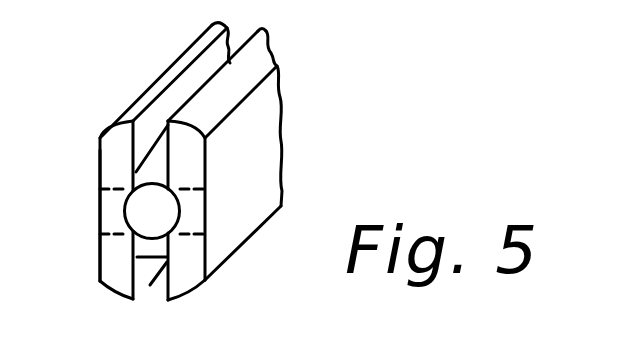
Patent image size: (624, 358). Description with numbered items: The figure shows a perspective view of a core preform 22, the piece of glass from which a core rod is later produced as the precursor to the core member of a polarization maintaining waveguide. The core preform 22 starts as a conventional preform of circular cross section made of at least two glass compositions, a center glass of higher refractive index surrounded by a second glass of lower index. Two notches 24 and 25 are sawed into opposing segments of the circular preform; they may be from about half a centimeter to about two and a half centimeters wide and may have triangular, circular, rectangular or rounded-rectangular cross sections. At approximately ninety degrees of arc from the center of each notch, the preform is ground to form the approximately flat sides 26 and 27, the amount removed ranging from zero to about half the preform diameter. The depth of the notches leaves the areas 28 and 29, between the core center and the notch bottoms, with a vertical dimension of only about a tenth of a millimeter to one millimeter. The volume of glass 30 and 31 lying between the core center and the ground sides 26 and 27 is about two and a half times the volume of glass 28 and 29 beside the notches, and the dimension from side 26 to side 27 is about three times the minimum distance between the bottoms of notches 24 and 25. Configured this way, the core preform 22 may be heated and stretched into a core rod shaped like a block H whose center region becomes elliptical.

The core preform 22 is at (290, 46).
The notch 24 is at (155, 157).
The notch 25 is at (152, 258).
The flat side 26 is at (232, 248).
The flat side 27 is at (100, 174).
The area 28 is at (150, 172).
The area 29 is at (135, 252).
The volume of glass 30 is at (188, 208).
The volume of glass 31 is at (110, 212).